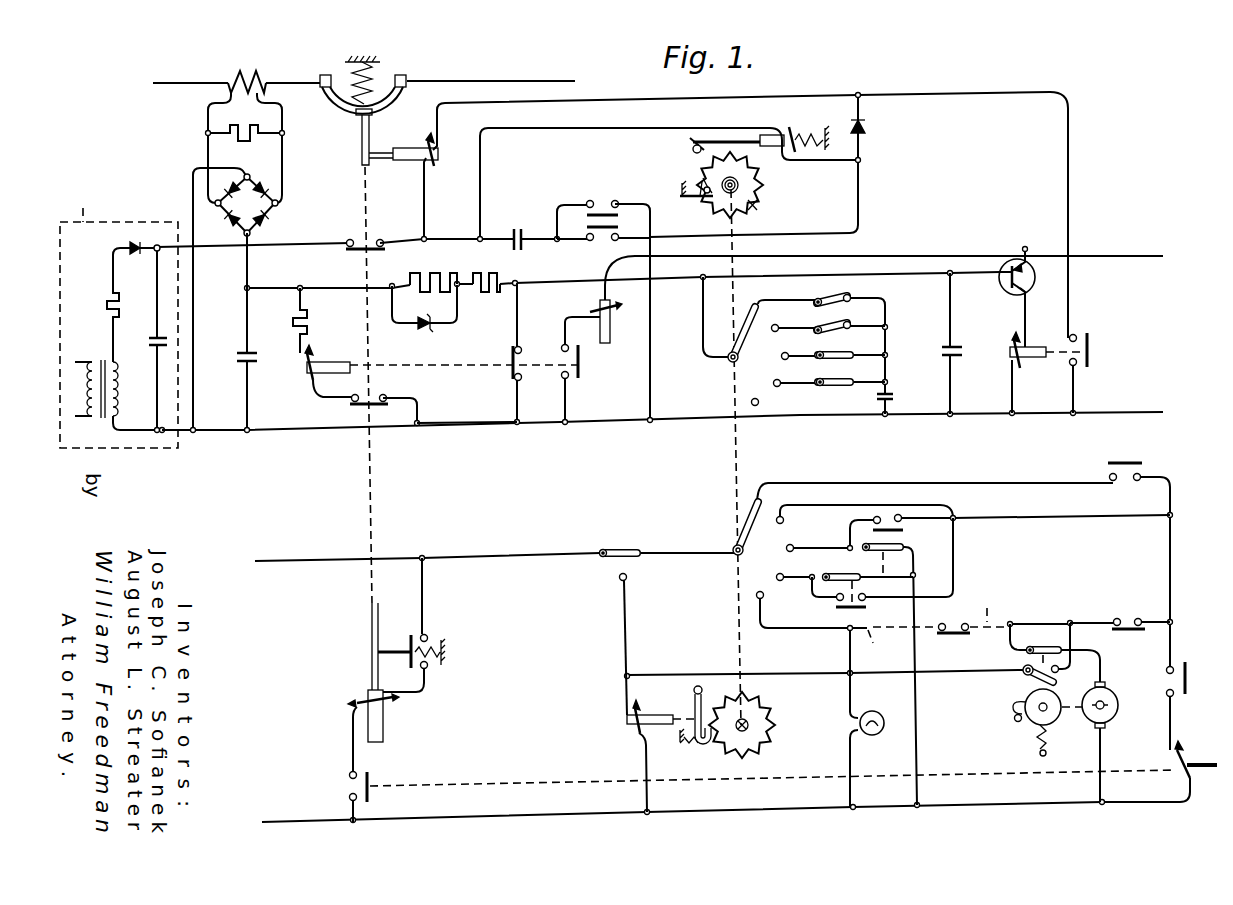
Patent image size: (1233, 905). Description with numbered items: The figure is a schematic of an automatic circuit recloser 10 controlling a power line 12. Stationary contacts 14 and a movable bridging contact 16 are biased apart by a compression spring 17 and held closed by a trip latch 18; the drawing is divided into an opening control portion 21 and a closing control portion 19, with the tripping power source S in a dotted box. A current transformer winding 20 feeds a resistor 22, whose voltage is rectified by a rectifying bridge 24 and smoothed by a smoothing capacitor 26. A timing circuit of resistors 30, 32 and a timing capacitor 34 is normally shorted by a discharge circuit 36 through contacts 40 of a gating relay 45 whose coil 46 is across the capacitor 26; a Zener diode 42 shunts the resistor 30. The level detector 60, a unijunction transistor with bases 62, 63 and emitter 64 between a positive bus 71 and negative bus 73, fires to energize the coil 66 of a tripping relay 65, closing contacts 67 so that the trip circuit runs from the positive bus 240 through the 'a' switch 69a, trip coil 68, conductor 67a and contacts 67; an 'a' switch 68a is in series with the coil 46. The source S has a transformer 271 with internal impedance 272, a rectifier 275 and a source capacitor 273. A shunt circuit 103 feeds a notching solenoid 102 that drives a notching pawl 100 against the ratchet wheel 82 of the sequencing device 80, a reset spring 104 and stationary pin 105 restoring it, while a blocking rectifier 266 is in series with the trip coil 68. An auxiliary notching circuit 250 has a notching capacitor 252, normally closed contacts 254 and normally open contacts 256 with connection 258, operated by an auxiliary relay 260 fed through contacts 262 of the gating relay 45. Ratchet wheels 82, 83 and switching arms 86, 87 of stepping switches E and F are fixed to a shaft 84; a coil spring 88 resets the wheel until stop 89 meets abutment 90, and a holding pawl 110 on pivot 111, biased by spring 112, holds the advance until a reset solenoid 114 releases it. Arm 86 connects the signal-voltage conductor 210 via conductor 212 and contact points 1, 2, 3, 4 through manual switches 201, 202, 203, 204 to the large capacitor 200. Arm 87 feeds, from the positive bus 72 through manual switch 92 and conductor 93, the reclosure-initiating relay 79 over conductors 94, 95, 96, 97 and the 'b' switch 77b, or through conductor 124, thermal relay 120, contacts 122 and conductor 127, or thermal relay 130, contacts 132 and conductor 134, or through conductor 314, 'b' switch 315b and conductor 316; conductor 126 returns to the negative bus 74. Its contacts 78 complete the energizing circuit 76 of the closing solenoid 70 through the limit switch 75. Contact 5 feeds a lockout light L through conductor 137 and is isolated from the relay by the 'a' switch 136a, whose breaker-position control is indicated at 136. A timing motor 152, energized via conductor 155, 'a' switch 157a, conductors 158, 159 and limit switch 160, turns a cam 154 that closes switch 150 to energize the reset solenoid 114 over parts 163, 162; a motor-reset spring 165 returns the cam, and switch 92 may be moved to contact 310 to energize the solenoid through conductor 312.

The automatic circuit recloser 10 is at (350, 133).
The power line 12 is at (156, 82).
The stationary contacts 14 is at (322, 75).
The movable bridging contact 16 is at (384, 98).
The compression spring 17 is at (373, 71).
The trip latch 18 is at (374, 150).
The closing control portion 19 is at (524, 607).
The current transformer secondary winding 20 is at (250, 77).
The opening control portion 21 is at (477, 420).
The resistor 22 is at (246, 124).
The rectifying bridge 24 is at (262, 205).
The smoothing capacitor 26 is at (240, 355).
The resistor 30 is at (430, 273).
The resistor 32 is at (484, 292).
The timing capacitor 34 is at (965, 352).
The discharge circuit 36 is at (520, 300).
The contacts 40 is at (511, 374).
The Zener diode 42 is at (435, 328).
The gating relay 45 is at (326, 362).
The operating coil 46 is at (306, 379).
The level detector 60 is at (1001, 286).
The base 62 is at (1030, 264).
The base 63 is at (1031, 292).
The emitter 64 is at (1008, 266).
The tripping relay 65 is at (1038, 346).
The coil 66 is at (1024, 363).
The contacts 67 is at (1090, 342).
The conductor 67a is at (1070, 163).
The trip coil 68 is at (436, 161).
The 'a' switch 68a is at (352, 404).
The 'a' switch 69a is at (353, 251).
The solenoid 70 is at (390, 712).
The positive bus 71 is at (1133, 247).
The positive bus 72 is at (300, 560).
The negative bus 73 is at (297, 430).
The negative bus 74 is at (300, 817).
The limit switch 75 is at (410, 634).
The energizing circuit 76 is at (352, 728).
The 'b' switch 77b is at (1189, 679).
The closing-control contacts 78 is at (350, 785).
The reclosure-initiating relay 79 is at (1192, 758).
The sequencing device 80 is at (760, 164).
The ratchet wheel 82 is at (758, 207).
The ratchet wheel 83 is at (765, 749).
The rotatable shaft 84 is at (728, 241).
The switching arm 86 is at (738, 333).
The switching arm 87 is at (742, 527).
The coil spring 88 is at (731, 177).
The stop 89 is at (702, 183).
The stationary abutment 90 is at (710, 204).
The manually operable switch 92 is at (618, 549).
The conductor 93 is at (670, 553).
The conductor 94 is at (822, 505).
The conductor 95 is at (1048, 518).
The conductor 96 is at (1171, 570).
The conductor 97 is at (1172, 632).
The notching pawl 100 is at (755, 135).
The notching solenoid 102 is at (790, 127).
The shunt circuit 103 is at (527, 128).
The reset spring 104 is at (812, 132).
The stationary pin 105 is at (691, 146).
The holding pawl 110 is at (705, 748).
The stationary pivot 111 is at (693, 689).
The spring 112 is at (680, 741).
The reset solenoid 114 is at (628, 729).
The time delay pick-up relay 120 is at (881, 551).
The contacts 122 is at (890, 515).
The conductor 124 is at (811, 546).
The conductor 126 is at (918, 712).
The conductor 127 is at (919, 520).
The thermally controlled relay 130 is at (845, 576).
The contacts 132 is at (832, 602).
The conductor 134 is at (874, 601).
The mechanical link 136 is at (938, 622).
The 'a' switch 136a is at (951, 636).
The conductor 137 is at (796, 628).
The normally-open switch 150 is at (1022, 680).
The timing motor 152 is at (1109, 718).
The rotary cam 154 is at (1054, 722).
The conductor 155 is at (1139, 618).
The 'a' switch 157a is at (1127, 631).
The conductor 158 is at (1048, 621).
The conductor 159 is at (1010, 648).
The limit switch 160 is at (1046, 647).
The conductor 162 is at (795, 675).
The conductor 163 is at (1071, 637).
The motor-reset spring 165 is at (1034, 738).
The capacitor 200 is at (896, 397).
The manually operable switch 201 is at (850, 299).
The manually operable switch 202 is at (850, 326).
The manually operable switch 203 is at (852, 354).
The manually operable switch 204 is at (852, 381).
The conductor 210 is at (690, 281).
The conductor 212 is at (703, 331).
The positive bus 240 is at (323, 244).
The auxiliary notching circuit 250 is at (800, 233).
The notching capacitor 252 is at (515, 228).
The normally closed contacts 254 is at (586, 242).
The normally open contacts 256 is at (603, 200).
The connection 258 is at (651, 384).
The auxiliary relay 260 is at (610, 320).
The normally open contacts 262 is at (582, 370).
The blocking rectifier 266 is at (866, 126).
The transformer 271 is at (103, 360).
The internal impedance 272 is at (106, 296).
The source capacitor 273 is at (151, 338).
The rectifier 275 is at (130, 242).
The conductor 314 is at (948, 482).
The 'b' switch 315b is at (1127, 462).
The conductor 316 is at (1171, 493).
The contact point 310 is at (618, 578).
The conductor 312 is at (626, 643).
The contact 1 is at (778, 399).
The contact 2 is at (789, 417).
The contact 3 is at (812, 448).
The contact 4 is at (792, 473).
The contact 5 is at (772, 506).
The stepping switch E is at (740, 358).
The stepping switch F is at (744, 552).
The lockout-indicating light L is at (880, 734).
The power source S is at (119, 319).